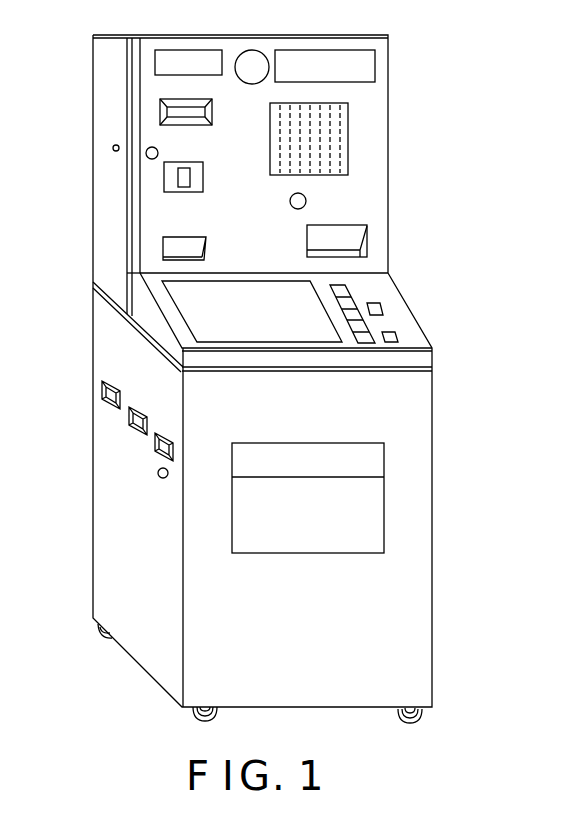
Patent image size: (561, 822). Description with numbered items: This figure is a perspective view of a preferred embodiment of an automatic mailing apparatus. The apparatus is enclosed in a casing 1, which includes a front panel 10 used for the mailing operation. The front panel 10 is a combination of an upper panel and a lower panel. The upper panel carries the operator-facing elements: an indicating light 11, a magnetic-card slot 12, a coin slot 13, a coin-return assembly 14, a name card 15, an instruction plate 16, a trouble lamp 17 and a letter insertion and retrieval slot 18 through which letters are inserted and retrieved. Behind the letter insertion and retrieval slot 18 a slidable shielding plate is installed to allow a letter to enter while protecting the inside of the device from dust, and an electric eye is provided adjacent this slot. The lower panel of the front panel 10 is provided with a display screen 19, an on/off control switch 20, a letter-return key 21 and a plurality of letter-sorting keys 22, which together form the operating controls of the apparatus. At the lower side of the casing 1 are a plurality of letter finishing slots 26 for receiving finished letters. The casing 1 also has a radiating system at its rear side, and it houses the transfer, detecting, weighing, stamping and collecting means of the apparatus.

The casing 1 is at (437, 405).
The front panel 10 is at (373, 108).
The indicating light 11 is at (177, 62).
The magnetic-card slot 12 is at (160, 112).
The coin slot 13 is at (170, 182).
The coin-return assembly 14 is at (172, 248).
The name card 15 is at (300, 60).
The instruction plate 16 is at (340, 143).
The trouble lamp 17 is at (306, 201).
The letter insertion and retrieval slot 18 is at (367, 245).
The display screen 19 is at (200, 325).
The on/off control switch 20 is at (397, 341).
The letter-return key 21 is at (378, 311).
The letter-sorting keys 22 is at (345, 290).
The letter finishing slots 26 is at (135, 429).